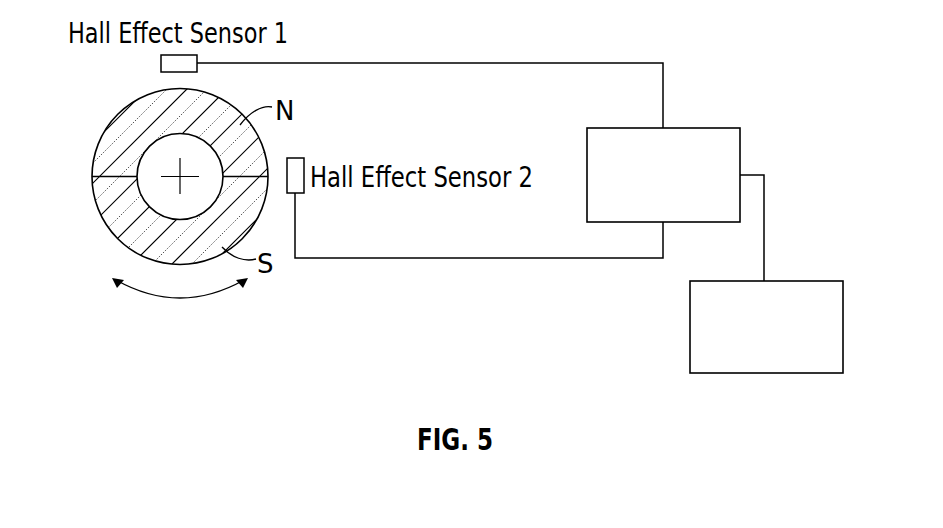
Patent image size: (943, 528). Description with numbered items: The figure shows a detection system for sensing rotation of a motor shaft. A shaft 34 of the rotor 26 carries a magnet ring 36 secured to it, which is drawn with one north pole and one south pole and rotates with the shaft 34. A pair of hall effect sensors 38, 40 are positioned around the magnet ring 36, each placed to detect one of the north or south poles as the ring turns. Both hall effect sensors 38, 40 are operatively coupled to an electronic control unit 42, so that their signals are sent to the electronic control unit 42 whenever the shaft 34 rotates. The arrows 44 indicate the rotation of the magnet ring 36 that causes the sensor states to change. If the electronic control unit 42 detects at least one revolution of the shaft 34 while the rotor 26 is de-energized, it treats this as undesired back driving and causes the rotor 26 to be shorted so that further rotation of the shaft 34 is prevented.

The rotor 26 is at (788, 292).
The shaft 34 is at (173, 185).
The magnet ring 36 is at (122, 137).
The hall effect sensor 38 is at (160, 65).
The hall effect sensor 40 is at (297, 157).
The electronic control unit 42 is at (695, 127).
The arrows 44 is at (183, 300).